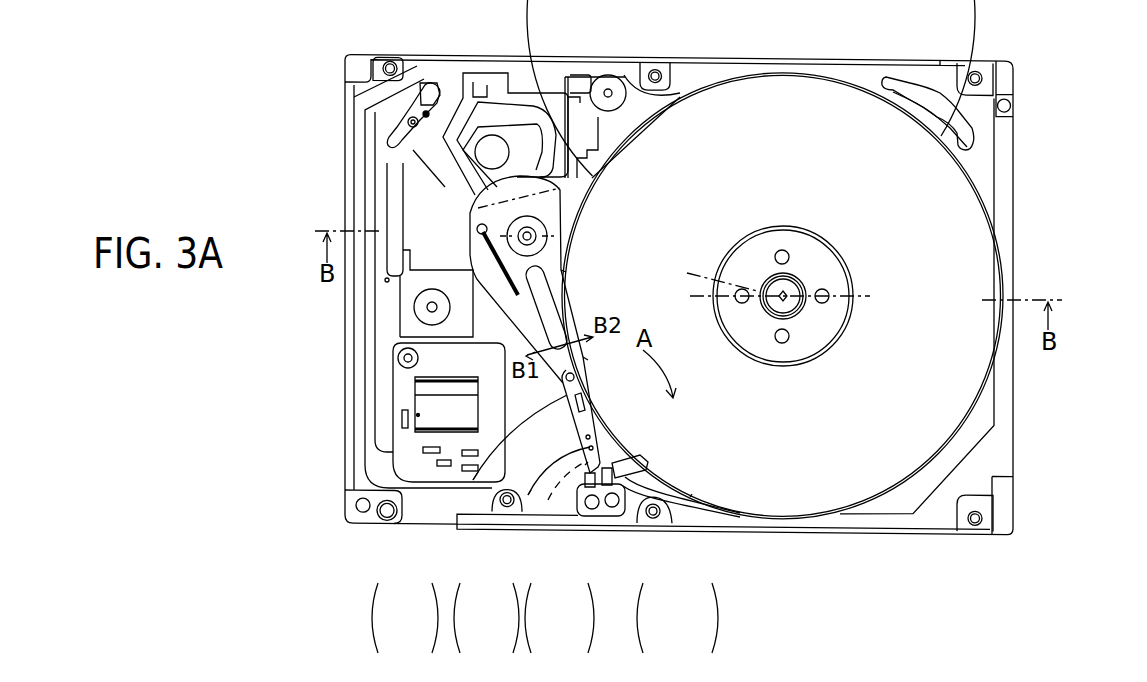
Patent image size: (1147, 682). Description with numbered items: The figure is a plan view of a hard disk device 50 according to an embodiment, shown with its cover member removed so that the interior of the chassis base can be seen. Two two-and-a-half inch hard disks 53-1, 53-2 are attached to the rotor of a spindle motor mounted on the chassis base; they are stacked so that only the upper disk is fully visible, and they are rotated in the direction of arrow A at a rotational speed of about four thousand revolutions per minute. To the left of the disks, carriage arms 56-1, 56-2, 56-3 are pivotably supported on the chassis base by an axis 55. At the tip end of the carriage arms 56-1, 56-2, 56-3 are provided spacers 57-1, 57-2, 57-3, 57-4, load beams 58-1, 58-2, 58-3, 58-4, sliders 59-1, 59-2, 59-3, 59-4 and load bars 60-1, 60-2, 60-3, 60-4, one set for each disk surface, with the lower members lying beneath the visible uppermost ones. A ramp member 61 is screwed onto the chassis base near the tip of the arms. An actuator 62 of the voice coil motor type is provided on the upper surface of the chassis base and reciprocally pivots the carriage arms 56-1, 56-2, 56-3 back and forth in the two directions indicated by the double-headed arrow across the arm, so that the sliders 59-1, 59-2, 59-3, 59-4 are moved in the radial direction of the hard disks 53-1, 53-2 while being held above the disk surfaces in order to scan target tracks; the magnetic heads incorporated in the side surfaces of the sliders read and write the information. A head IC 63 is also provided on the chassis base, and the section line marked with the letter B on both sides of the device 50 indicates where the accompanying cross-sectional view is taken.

The hard disk device 50 is at (470, 31).
The hard disk 53-1 is at (975, 235).
The hard disk 53-2 is at (833, 295).
The axis 55 is at (560, 220).
The carriage arm 56-1 is at (570, 249).
The carriage arm 56-2 is at (651, 295).
The carriage arm 56-3 is at (563, 271).
The spacer 57-1 is at (473, 480).
The spacer 57-2 is at (401, 618).
The spacer 57-3 is at (410, 618).
The spacer 57-4 is at (430, 564).
The load beam 58-1 is at (528, 495).
The load beam 58-2 is at (482, 618).
The load beam 58-3 is at (491, 618).
The load beam 58-4 is at (497, 573).
The slider 59-1 is at (548, 500).
The slider 59-2 is at (553, 618).
The slider 59-3 is at (564, 618).
The slider 59-4 is at (561, 559).
The load bar 60-1 is at (632, 508).
The load bar 60-2 is at (668, 618).
The load bar 60-3 is at (684, 618).
The load bar 60-4 is at (675, 575).
The ramp member 61 is at (600, 516).
The actuator 62 is at (402, 183).
The head IC 63 is at (453, 397).